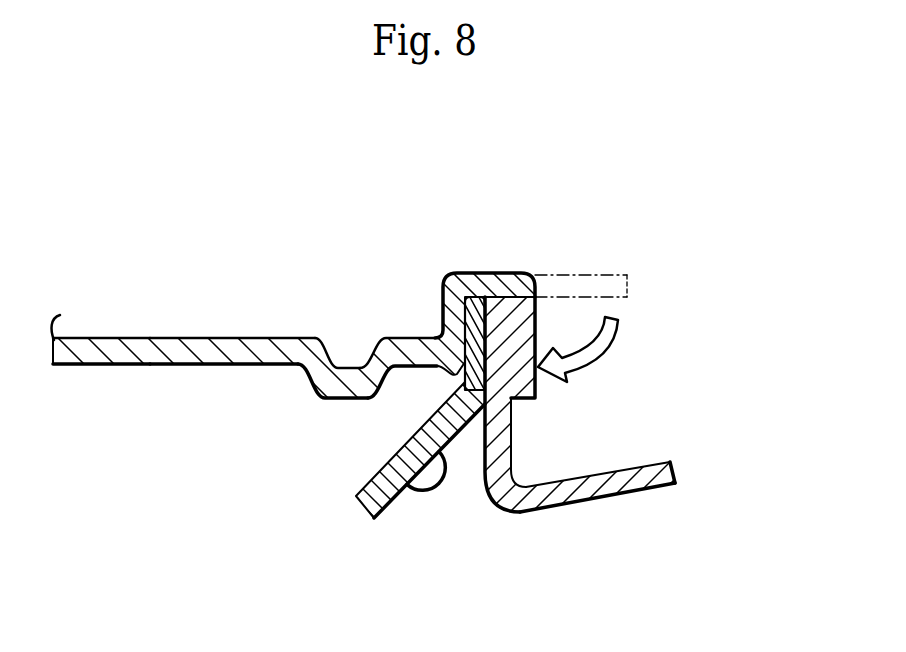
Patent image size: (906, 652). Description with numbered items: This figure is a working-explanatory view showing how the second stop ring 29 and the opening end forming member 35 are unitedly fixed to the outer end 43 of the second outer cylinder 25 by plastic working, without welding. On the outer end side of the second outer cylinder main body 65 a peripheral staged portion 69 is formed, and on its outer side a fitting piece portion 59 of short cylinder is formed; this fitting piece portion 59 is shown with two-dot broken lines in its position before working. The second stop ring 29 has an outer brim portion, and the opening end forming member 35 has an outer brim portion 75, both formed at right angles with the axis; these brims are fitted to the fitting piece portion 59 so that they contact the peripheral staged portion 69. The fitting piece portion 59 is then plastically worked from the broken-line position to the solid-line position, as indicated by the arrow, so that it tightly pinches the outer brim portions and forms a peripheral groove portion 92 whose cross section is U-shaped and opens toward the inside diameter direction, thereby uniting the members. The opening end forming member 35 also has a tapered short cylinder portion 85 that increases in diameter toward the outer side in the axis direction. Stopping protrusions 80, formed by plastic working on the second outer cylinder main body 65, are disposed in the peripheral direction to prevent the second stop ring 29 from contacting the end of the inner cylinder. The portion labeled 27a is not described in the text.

The second outer cylinder 25 is at (243, 338).
The upright flange of panel 27a is at (437, 313).
The second stop ring 29 is at (390, 503).
The opening end forming member 35 is at (519, 511).
The outer end of the second outer cylinder 43 is at (480, 272).
The fitting piece portion 59 is at (537, 400).
The second outer cylinder main body 65 is at (142, 338).
The peripheral staged portion 69 is at (407, 343).
The outer brim portion 75 is at (537, 335).
The stopping protrusions 80 is at (343, 403).
The tapered short cylinder portion 85 is at (650, 463).
The peripheral groove portion 92 is at (510, 297).